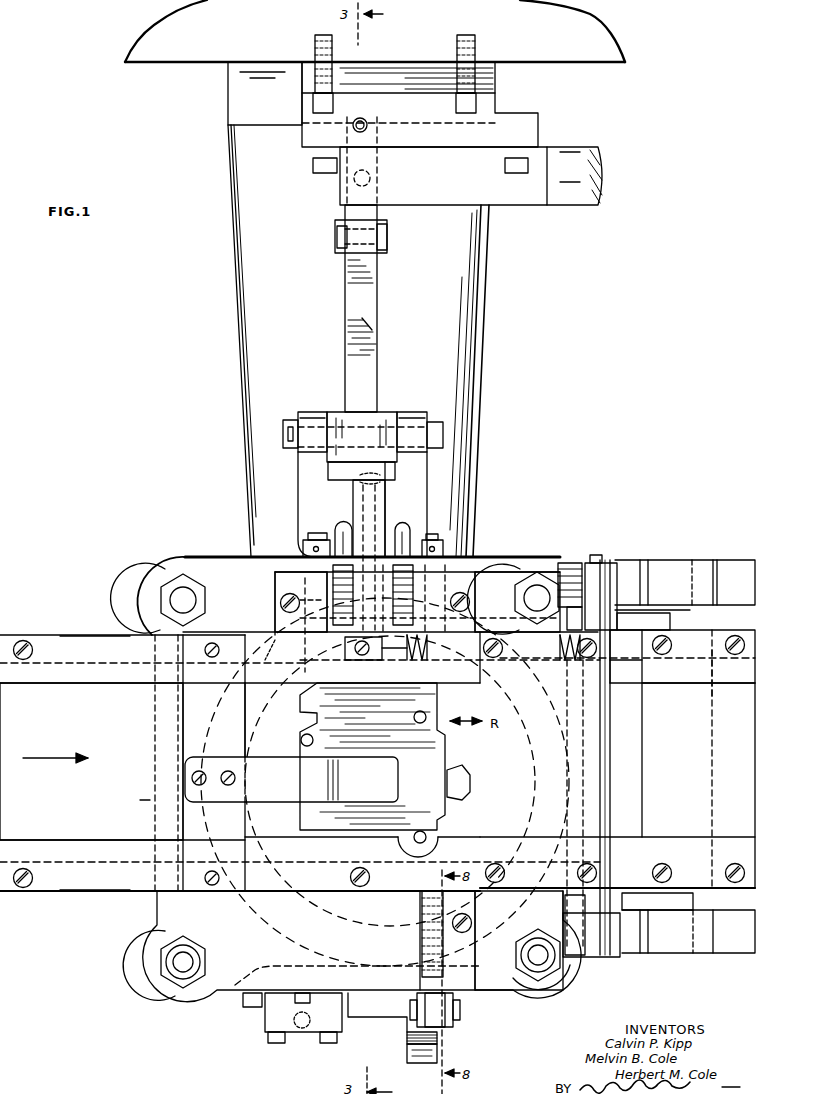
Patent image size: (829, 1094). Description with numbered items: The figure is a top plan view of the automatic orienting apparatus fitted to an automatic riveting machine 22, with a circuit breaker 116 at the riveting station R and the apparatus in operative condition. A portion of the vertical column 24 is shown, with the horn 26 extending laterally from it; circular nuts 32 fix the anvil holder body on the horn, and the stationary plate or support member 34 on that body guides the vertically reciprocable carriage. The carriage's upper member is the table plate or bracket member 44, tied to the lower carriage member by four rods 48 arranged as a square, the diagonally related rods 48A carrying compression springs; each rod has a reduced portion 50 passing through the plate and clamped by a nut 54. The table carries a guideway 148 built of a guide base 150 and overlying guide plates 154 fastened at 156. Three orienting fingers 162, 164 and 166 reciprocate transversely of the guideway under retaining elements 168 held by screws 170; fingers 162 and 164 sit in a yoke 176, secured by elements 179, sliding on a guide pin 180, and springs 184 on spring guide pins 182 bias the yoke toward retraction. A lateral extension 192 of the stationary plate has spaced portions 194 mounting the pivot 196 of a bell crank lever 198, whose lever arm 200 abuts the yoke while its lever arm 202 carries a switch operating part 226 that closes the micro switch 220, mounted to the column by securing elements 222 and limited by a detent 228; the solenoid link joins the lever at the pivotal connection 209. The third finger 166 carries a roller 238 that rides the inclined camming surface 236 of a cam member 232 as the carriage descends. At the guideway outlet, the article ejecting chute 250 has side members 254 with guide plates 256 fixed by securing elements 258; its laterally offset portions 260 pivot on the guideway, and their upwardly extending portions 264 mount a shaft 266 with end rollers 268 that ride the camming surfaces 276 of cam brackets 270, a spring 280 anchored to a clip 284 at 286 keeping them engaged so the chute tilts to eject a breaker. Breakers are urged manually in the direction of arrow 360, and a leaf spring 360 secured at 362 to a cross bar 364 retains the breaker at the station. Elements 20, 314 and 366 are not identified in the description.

The upper mounting bracket 20 is at (160, 552).
The automatic riveting machine 22 is at (615, 42).
The vertical column 24 is at (172, 62).
The horn 26 is at (236, 305).
The circular nuts 32 is at (530, 725).
The plate or support member 34 is at (160, 1000).
The table plate or bracket member 44 is at (152, 801).
The rods 48 is at (168, 600).
The diagonally related rods 48A is at (530, 588).
The portion of reduced diameter 50 is at (176, 592).
The nut 54 is at (163, 598).
The circuit breaker 116 is at (452, 752).
The guideway 148 is at (42, 633).
The guide base 150 is at (91, 761).
The guide plates 154 is at (97, 637).
The securing elements 156 is at (33, 649).
The orienting finger 162 is at (304, 648).
The orienting finger 164 is at (445, 688).
The third finger 166 is at (420, 880).
The retaining elements 168 is at (280, 586).
The screws 170 is at (280, 603).
The yoke 176 is at (394, 492).
The securing elements 179 is at (320, 540).
The guide pin 180 is at (368, 496).
The spring guide pins 182 is at (343, 528).
The springs 184 is at (373, 595).
The lateral extension 192 is at (298, 483).
The spaced portions 194 is at (312, 412).
The pivot 196 is at (443, 436).
The bell crank lever 198 is at (380, 282).
The lever arm 200 is at (375, 415).
The lever arm 202 is at (375, 333).
The pivotal connection 209 is at (392, 236).
The micro switch 220 is at (312, 130).
The securing elements 222 is at (455, 98).
The switch operating part 226 is at (356, 182).
The detent 228 is at (370, 120).
The cam member 232 is at (407, 1041).
The inclined camming surface 236 is at (407, 1055).
The roller 238 is at (448, 1000).
The article ejecting chute 250 is at (617, 759).
The side members 254 is at (717, 680).
The guide plates 256 is at (670, 683).
The securing elements 258 is at (725, 646).
The laterally offset portions 260 is at (665, 620).
The upwardly extending portions 264 is at (572, 632).
The shaft 266 is at (604, 782).
The rollers 268 is at (612, 575).
The cam brackets 270 is at (725, 560).
The camming surface 276 is at (648, 565).
The spring 280 is at (565, 660).
The clip 284 is at (410, 660).
The securing point 286 is at (355, 655).
The switch block 314 is at (366, 993).
The leaf spring 360 is at (42, 760).
The securing point 362 is at (228, 786).
The cross bar 364 is at (226, 720).
The guide screw 366 is at (214, 643).